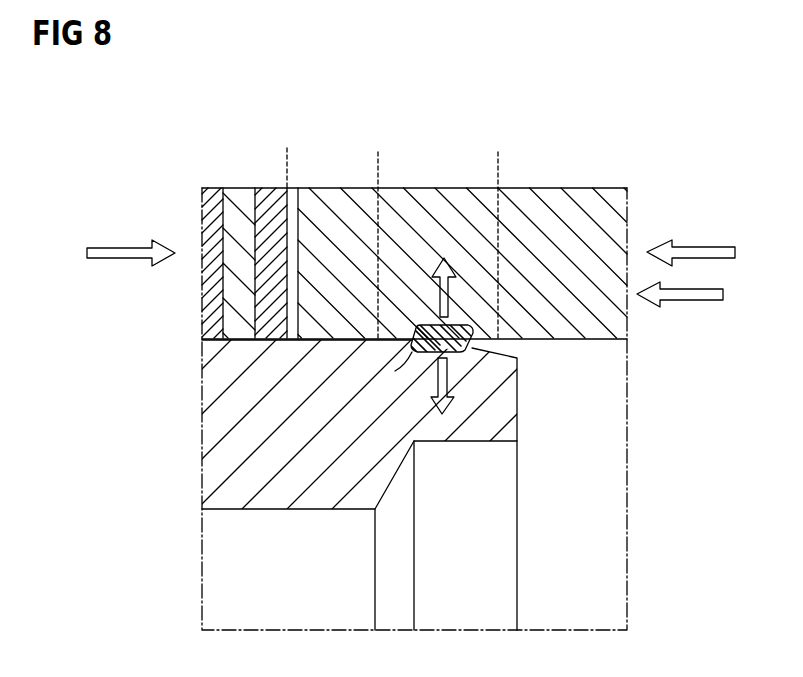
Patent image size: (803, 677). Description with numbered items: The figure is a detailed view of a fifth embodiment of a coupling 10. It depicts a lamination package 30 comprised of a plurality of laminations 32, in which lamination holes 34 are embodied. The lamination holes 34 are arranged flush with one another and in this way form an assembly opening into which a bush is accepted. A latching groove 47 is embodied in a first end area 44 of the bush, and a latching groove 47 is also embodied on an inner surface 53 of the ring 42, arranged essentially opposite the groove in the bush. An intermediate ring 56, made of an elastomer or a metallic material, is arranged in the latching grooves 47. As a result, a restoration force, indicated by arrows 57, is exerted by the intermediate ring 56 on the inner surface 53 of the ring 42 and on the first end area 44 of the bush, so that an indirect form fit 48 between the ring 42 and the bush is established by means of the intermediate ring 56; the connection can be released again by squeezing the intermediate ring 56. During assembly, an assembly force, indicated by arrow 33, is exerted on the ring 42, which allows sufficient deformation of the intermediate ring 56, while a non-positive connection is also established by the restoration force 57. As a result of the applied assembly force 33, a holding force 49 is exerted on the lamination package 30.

The coupling 10 is at (128, 547).
The lamination package 30 is at (287, 148).
The laminations 32 is at (232, 282).
The lamination holes 34 is at (228, 322).
The ring 42 is at (598, 188).
The first end area 44 is at (214, 412).
The latching groove 47 is at (395, 371).
The indirect form fit 48 is at (497, 152).
The holding force 49 is at (120, 245).
The inner surface 53 is at (588, 340).
The intermediate ring 56 is at (472, 341).
The restoration force 57 is at (433, 290).
The assembly force 33 is at (698, 304).